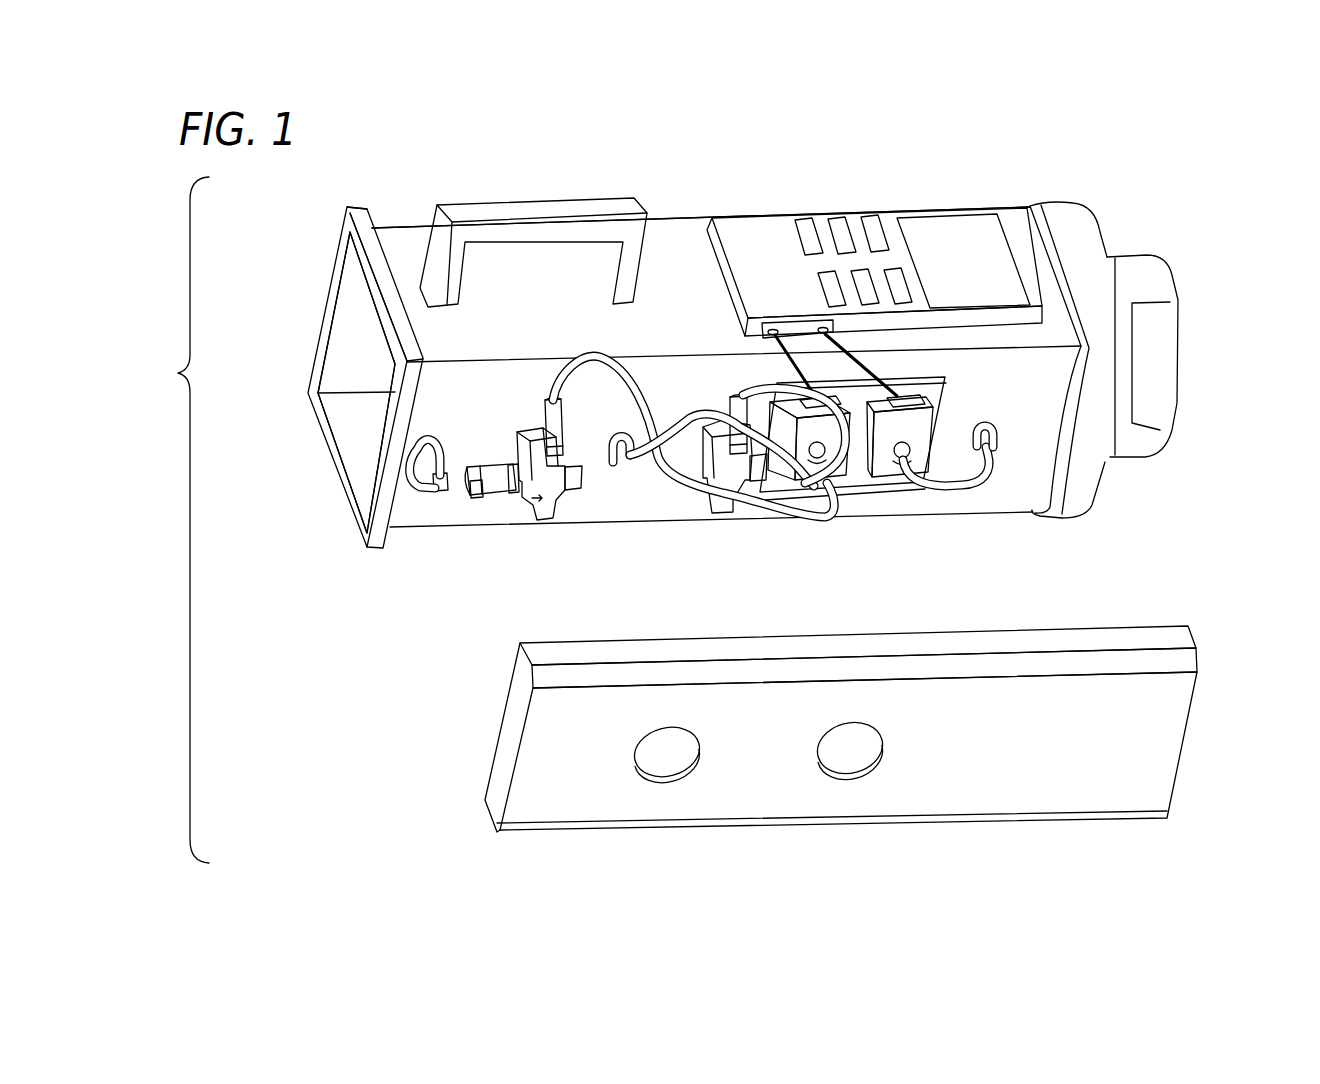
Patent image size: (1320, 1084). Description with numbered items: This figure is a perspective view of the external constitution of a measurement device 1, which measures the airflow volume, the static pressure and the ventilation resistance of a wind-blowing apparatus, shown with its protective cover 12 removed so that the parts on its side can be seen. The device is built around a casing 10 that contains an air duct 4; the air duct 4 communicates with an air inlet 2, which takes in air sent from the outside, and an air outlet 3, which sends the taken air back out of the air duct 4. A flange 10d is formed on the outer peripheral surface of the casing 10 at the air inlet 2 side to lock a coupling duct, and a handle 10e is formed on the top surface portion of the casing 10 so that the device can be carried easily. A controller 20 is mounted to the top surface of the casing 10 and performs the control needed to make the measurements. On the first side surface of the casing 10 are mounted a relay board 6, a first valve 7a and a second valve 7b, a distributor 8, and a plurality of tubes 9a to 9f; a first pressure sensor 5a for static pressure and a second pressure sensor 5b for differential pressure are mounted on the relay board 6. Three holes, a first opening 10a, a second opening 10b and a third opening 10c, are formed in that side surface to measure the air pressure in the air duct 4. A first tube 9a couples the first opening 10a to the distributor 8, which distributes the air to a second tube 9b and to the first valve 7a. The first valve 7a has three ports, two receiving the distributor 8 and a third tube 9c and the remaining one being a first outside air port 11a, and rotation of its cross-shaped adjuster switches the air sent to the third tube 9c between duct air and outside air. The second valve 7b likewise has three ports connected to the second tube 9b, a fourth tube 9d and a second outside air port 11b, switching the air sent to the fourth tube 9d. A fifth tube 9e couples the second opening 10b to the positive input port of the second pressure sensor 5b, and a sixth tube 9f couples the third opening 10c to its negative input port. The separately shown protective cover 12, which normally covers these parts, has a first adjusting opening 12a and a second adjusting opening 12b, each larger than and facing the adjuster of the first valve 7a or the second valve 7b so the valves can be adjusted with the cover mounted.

The measurement device 1 is at (687, 200).
The air inlet 2 is at (362, 448).
The air outlet 3 is at (1173, 433).
The air duct 4 is at (348, 334).
The first pressure sensor 5a is at (782, 470).
The second pressure sensor 5b is at (880, 477).
The relay board 6 is at (850, 467).
The first valve 7a is at (548, 508).
The second valve 7b is at (738, 514).
The distributor 8 is at (480, 492).
The first tube 9a is at (420, 490).
The second tube 9b is at (511, 492).
The third tube 9c is at (637, 380).
The fourth tube 9d is at (740, 400).
The fifth tube 9e is at (713, 412).
The sixth tube 9f is at (935, 490).
The casing 10 is at (405, 232).
The first opening 10a is at (440, 491).
The second opening 10b is at (612, 463).
The third opening 10c is at (985, 450).
The flange 10d is at (347, 209).
The handle 10e is at (543, 213).
The first outside air port 11a is at (598, 461).
The second outside air port 11b is at (758, 481).
The protective cover 12 is at (940, 763).
The first adjusting opening 12a is at (633, 757).
The second adjusting opening 12b is at (815, 757).
The controller 20 is at (888, 218).